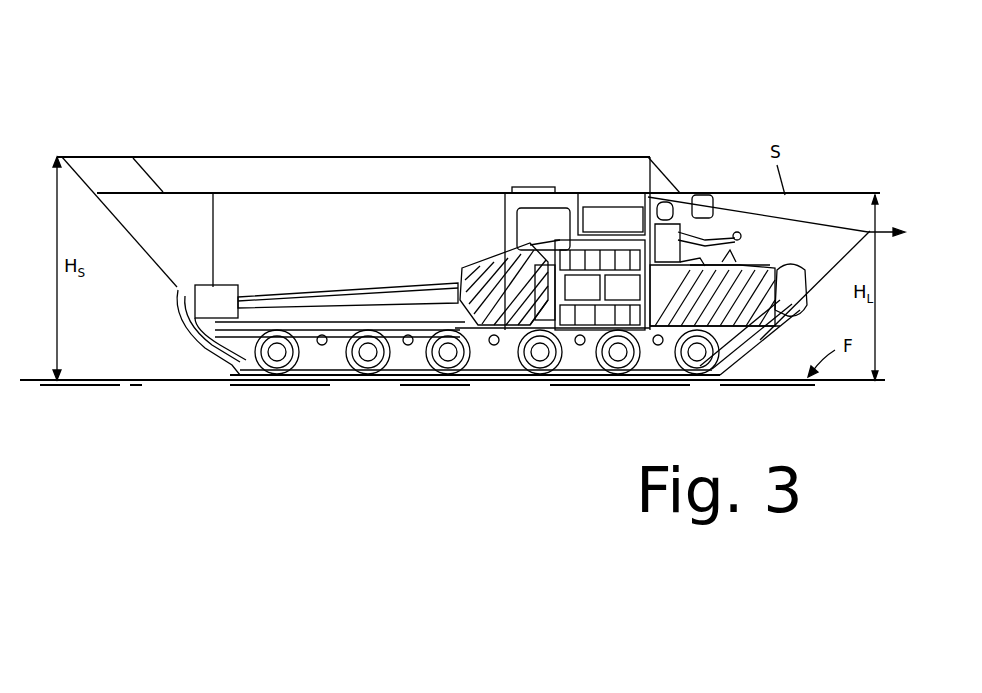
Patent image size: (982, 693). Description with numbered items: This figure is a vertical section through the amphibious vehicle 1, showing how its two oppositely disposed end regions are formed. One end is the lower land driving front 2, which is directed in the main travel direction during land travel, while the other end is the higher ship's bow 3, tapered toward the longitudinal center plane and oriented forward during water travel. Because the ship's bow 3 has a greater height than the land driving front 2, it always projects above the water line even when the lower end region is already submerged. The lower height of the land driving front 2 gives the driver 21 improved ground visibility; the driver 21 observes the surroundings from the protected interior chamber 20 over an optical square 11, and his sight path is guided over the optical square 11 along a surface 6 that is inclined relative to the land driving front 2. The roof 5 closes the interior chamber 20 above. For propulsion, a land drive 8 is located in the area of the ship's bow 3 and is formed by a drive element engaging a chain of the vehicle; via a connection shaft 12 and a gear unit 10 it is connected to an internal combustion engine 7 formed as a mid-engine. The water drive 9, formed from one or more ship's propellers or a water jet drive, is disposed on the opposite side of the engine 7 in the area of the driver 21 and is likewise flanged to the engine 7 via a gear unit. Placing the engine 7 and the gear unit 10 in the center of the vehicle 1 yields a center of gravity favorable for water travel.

The amphibious vehicle 1 is at (505, 95).
The land driving front 2 is at (806, 190).
The ship's bow 3 is at (193, 143).
The roof 5 is at (548, 155).
The inclined surface 6 is at (838, 197).
The internal combustion engine 7 is at (585, 325).
The land drive 8 is at (222, 305).
The water drive 9 is at (787, 310).
The gear unit 10 is at (480, 298).
The optical square 11 is at (707, 193).
The connection shaft 12 is at (345, 325).
The interior chamber 20 is at (468, 222).
The driver 21 is at (665, 197).